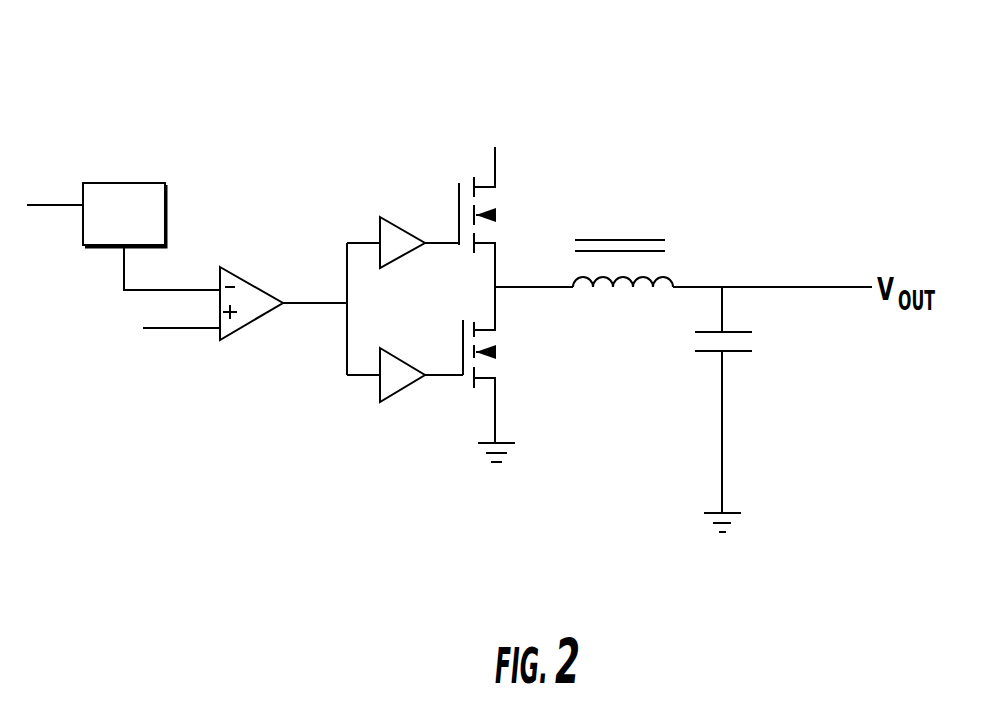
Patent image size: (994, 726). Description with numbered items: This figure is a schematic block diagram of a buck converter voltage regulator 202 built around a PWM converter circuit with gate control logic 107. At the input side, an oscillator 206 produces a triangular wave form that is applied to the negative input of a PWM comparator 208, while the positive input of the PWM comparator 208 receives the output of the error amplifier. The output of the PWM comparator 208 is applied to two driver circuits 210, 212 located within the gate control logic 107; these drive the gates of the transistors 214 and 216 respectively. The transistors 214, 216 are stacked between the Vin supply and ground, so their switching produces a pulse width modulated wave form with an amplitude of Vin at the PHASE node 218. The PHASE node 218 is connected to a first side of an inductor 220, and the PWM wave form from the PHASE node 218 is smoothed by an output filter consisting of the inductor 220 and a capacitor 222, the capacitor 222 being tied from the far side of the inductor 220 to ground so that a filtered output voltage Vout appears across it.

The gate control logic 107 is at (341, 90).
The voltage regulator 202 is at (804, 171).
The oscillator 206 is at (128, 183).
The PWM comparator 208 is at (243, 273).
The driver circuit 210 is at (410, 232).
The driver circuit 212 is at (397, 360).
The transistor 214 is at (523, 204).
The transistor 216 is at (514, 356).
The PHASE node 218 is at (496, 297).
The inductor 220 is at (667, 268).
The capacitor 222 is at (765, 345).